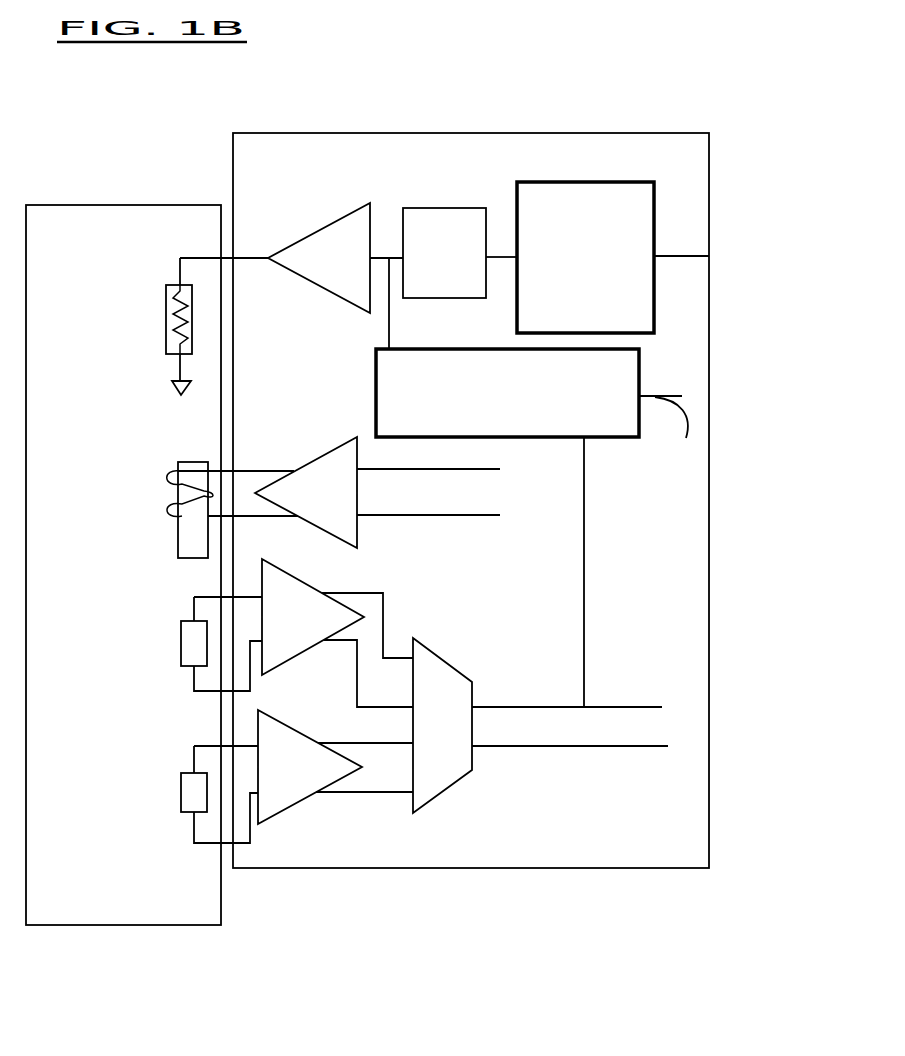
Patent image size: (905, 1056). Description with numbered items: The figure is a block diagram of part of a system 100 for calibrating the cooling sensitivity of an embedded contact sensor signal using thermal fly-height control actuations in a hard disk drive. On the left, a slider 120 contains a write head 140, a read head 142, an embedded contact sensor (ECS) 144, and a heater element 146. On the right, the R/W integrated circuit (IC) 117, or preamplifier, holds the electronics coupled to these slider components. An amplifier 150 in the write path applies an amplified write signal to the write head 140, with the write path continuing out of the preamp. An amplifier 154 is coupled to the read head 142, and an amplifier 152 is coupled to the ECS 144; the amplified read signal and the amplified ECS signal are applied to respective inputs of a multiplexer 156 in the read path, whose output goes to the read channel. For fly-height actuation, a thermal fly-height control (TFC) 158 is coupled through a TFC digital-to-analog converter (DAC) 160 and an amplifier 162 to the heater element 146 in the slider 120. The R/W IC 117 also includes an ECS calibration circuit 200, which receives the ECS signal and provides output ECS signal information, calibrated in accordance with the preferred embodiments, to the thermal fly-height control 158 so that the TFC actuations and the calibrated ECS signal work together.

The system 100 is at (440, 73).
The slider 120 is at (183, 231).
The heater element 146 is at (166, 326).
The write head 140 is at (195, 510).
The read head 142 is at (181, 644).
The embedded contact sensor (ECS) 144 is at (155, 814).
The R/W integrated circuit (IC) 117 is at (375, 161).
The amplifier 162 is at (338, 270).
The TFC digital-to-analog converter (DAC) 160 is at (464, 286).
The thermal fly-height control (TFC) 158 is at (602, 313).
The embedded contact sensor (ECS) calibration circuit 200 is at (523, 428).
The amplifier 150 is at (325, 503).
The amplifier 154 is at (331, 626).
The amplifier 152 is at (328, 775).
The multiplexer 156 is at (460, 736).